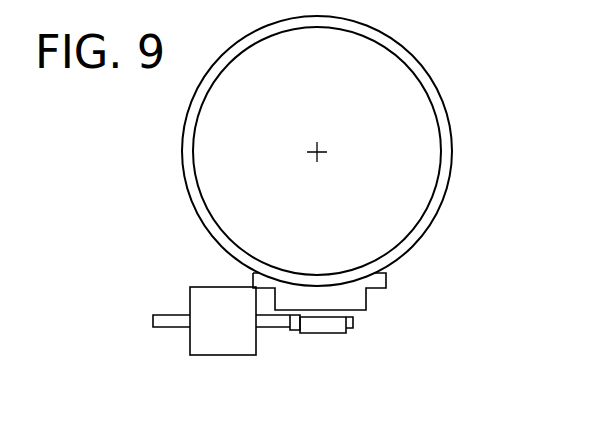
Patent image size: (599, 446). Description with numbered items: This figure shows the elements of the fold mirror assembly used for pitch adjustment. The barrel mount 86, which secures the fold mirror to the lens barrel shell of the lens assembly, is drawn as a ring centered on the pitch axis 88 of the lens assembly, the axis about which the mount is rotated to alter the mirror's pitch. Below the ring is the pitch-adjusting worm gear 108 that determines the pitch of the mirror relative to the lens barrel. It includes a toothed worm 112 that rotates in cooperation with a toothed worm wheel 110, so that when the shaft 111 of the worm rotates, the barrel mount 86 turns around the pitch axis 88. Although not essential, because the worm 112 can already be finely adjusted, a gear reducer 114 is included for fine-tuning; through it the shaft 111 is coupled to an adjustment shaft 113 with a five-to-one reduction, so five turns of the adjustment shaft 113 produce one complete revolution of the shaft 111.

The barrel mount 86 is at (423, 70).
The pitch axis 88 is at (319, 153).
The pitch-adjusting worm gear 108 is at (355, 350).
The toothed worm wheel 110 is at (360, 302).
The shaft 111 is at (273, 322).
The toothed worm 112 is at (318, 335).
The adjustment shaft 113 is at (172, 330).
The gear reducer 114 is at (223, 345).